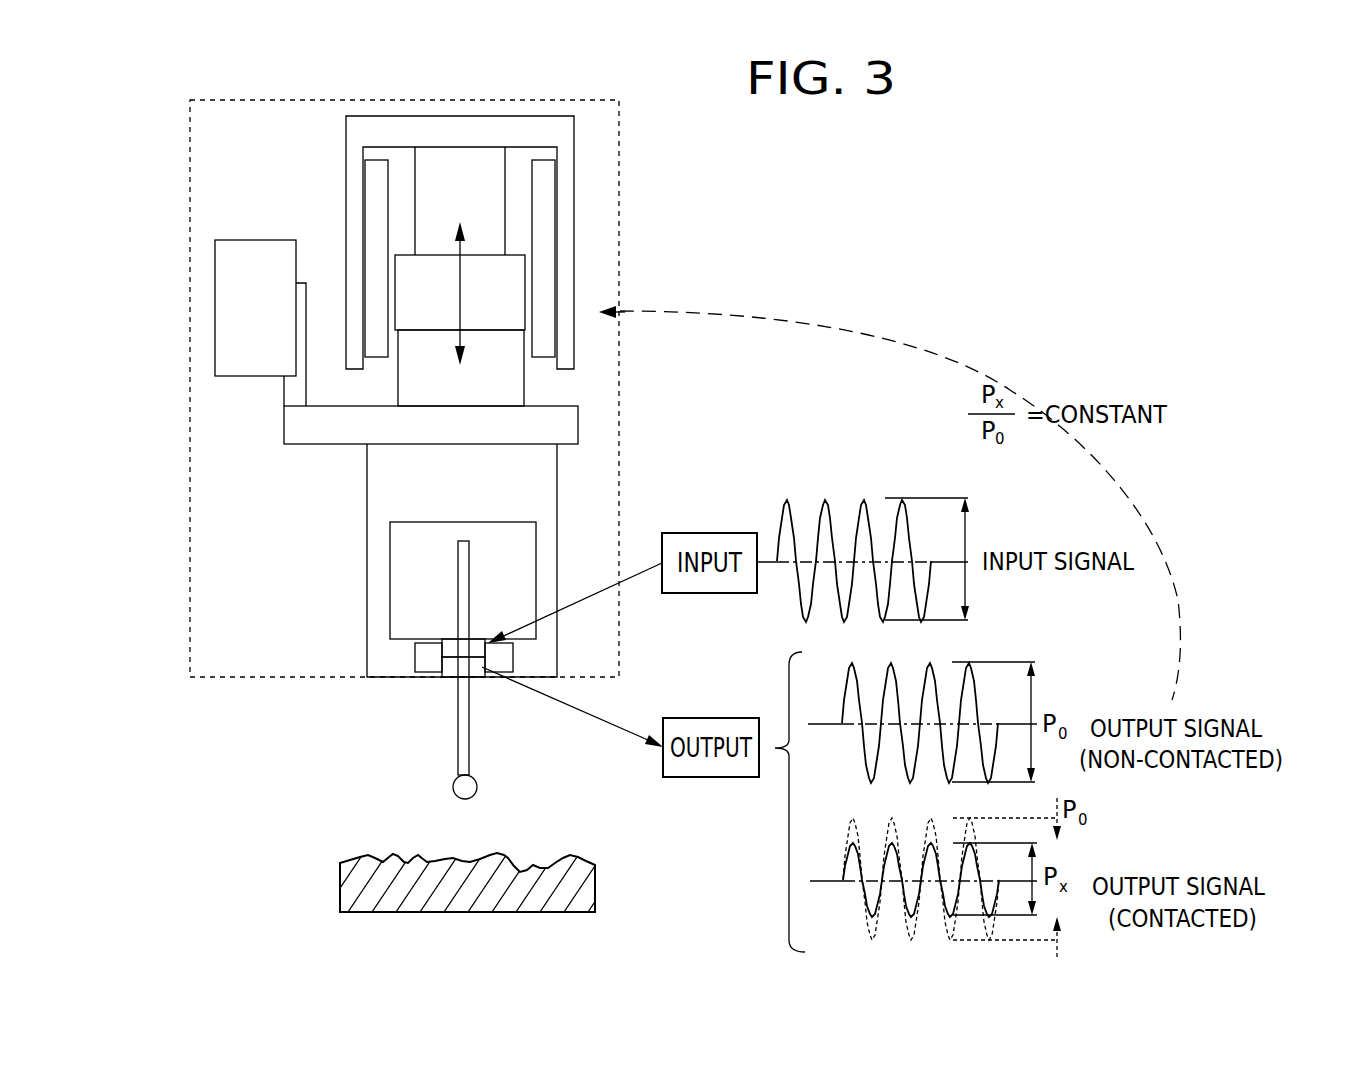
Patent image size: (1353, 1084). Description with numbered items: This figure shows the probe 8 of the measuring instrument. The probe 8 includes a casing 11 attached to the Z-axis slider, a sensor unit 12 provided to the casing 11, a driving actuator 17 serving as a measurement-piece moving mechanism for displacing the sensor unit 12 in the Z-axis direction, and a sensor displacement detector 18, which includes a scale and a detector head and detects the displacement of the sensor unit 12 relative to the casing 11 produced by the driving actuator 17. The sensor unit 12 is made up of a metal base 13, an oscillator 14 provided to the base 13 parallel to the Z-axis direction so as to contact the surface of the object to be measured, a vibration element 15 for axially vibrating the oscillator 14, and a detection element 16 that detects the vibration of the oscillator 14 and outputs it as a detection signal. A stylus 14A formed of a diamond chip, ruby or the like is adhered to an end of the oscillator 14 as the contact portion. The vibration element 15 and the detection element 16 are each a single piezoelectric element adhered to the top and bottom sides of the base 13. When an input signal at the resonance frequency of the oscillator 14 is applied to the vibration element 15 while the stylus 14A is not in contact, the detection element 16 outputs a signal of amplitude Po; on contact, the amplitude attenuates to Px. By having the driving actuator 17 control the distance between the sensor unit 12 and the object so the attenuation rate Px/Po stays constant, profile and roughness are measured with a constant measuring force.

The probe 8 is at (835, 200).
The casing 11 is at (620, 160).
The sensor unit 12 is at (286, 500).
The base 13 is at (373, 487).
The oscillator 14 is at (457, 567).
The stylus 14A is at (453, 783).
The vibration element 15 is at (452, 640).
The detection element 16 is at (453, 673).
The driving actuator 17 is at (574, 242).
The sensor displacement detector 18 is at (222, 325).